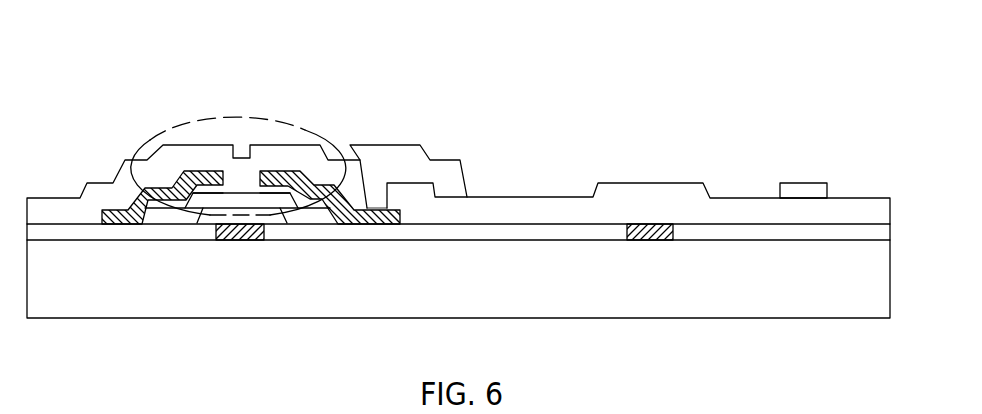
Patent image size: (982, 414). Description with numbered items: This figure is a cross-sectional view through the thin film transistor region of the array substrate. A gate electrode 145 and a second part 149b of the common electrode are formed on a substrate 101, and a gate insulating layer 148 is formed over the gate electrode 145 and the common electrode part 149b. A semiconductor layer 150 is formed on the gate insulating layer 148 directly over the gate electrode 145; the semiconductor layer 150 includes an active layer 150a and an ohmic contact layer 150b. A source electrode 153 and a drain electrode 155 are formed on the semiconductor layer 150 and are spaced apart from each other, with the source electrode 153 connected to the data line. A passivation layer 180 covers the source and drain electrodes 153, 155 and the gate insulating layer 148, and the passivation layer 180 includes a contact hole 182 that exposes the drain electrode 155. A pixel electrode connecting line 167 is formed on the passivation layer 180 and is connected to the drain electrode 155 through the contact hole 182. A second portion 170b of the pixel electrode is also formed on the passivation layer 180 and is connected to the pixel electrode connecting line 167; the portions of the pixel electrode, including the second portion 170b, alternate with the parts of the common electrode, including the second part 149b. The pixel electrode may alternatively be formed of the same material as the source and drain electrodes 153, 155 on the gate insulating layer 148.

The substrate 101 is at (875, 290).
The gate electrode 145 is at (233, 240).
The gate insulating layer 148 is at (413, 228).
The second part of the common electrode 149b is at (647, 226).
The semiconductor layer 150 is at (327, 43).
The active layer 150a is at (240, 200).
The ohmic contact layer 150b is at (203, 171).
The source electrode 153 is at (187, 172).
The drain electrode 155 is at (320, 174).
The pixel electrode connecting line 167 is at (415, 155).
The second portion of the pixel electrode 170b is at (808, 188).
The passivation layer 180 is at (507, 207).
The contact hole 182 is at (378, 183).